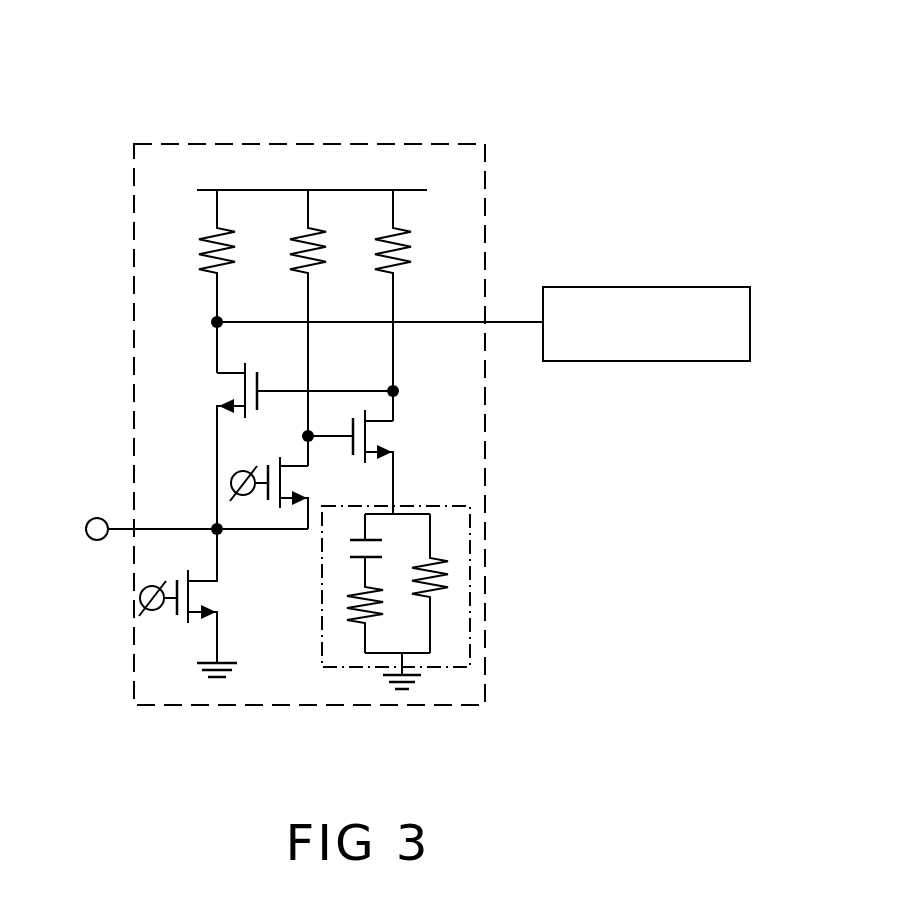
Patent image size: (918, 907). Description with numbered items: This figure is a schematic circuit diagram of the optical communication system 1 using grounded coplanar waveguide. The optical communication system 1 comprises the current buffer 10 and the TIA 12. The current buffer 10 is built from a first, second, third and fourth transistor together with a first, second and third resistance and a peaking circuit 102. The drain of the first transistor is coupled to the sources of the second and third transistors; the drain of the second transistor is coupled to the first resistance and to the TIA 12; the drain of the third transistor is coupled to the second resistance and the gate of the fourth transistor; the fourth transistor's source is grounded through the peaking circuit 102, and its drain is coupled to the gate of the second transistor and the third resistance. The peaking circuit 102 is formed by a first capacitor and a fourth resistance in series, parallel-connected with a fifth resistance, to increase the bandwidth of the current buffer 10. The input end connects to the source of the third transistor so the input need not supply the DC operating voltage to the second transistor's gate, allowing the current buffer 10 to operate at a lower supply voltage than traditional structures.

The optical communication system 1 is at (470, 56).
The current buffer 10 is at (315, 705).
The TIA 12 is at (652, 361).
The peaking circuit 102 is at (470, 552).